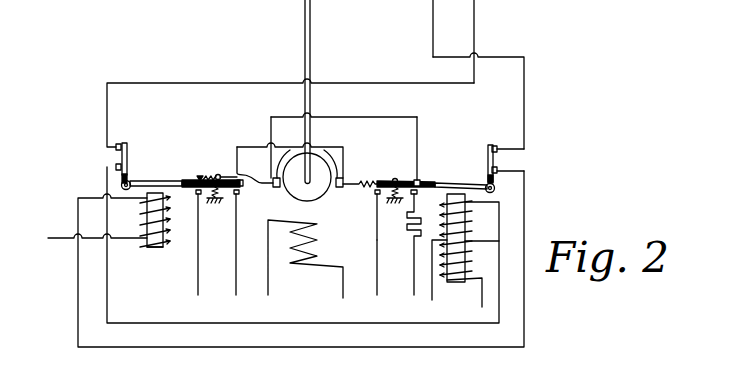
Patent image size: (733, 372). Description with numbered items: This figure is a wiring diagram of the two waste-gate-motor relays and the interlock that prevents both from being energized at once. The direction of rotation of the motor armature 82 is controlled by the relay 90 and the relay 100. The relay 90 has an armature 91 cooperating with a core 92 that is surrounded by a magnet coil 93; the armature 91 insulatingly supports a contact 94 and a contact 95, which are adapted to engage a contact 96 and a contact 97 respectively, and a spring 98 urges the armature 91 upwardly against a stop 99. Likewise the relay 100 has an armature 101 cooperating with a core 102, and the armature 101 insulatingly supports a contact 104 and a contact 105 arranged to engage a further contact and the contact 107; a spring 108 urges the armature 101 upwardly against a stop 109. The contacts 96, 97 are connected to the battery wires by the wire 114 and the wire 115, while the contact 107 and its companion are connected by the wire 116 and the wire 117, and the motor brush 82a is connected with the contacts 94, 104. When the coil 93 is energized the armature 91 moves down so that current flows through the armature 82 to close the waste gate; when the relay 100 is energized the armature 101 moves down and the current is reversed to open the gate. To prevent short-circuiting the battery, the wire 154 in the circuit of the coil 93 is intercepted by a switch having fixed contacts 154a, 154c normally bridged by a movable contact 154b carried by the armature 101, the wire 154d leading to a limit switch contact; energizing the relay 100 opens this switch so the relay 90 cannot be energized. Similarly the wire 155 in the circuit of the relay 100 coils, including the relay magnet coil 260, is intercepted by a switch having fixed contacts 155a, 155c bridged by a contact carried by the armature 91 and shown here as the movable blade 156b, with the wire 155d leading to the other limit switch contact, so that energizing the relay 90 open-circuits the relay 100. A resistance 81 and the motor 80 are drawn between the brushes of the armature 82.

The wire 154 is at (78, 207).
The fixed contact 154a is at (498, 169).
The movable contact 154b is at (488, 160).
The fixed contact 154c is at (494, 146).
The wire 154d is at (433, 54).
The wire 155 is at (168, 316).
The fixed contact 155a is at (116, 167).
The fixed contact 155c is at (119, 144).
The wire 155d is at (476, 37).
The switch blade 156b is at (127, 161).
The motor 80 is at (371, 153).
The resistor 81 is at (318, 228).
The motor armature 82 is at (330, 168).
The motor brush 82a is at (279, 176).
The relay 90 is at (166, 287).
The armature 91 is at (169, 180).
The core 92 is at (158, 248).
The magnet coil 93 is at (146, 214).
The contact 94 is at (200, 176).
The contact 95 is at (244, 186).
The contact 96 is at (197, 195).
The contact 97 is at (238, 195).
The spring 98 is at (216, 204).
The stop 99 is at (218, 174).
The relay 100 is at (459, 321).
The armature 101 is at (465, 184).
The core 102 is at (456, 283).
The contact 104 is at (417, 178).
The contact 105 is at (374, 182).
The contact 107 is at (375, 194).
The spring 108 is at (395, 204).
The stop 109 is at (395, 178).
The wire 114 is at (199, 268).
The wire 115 is at (237, 270).
The wire 116 is at (413, 287).
The wire 117 is at (376, 288).
The relay magnet coil 260 is at (477, 242).